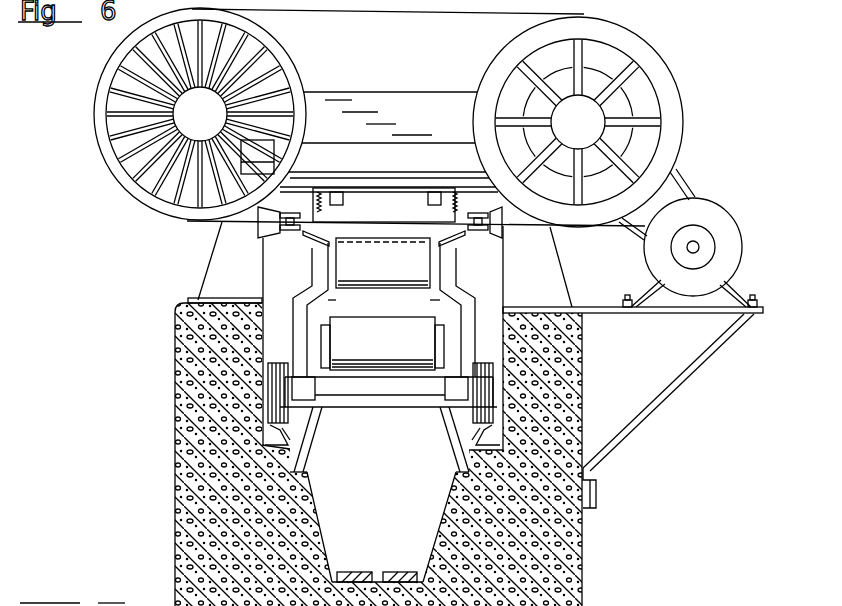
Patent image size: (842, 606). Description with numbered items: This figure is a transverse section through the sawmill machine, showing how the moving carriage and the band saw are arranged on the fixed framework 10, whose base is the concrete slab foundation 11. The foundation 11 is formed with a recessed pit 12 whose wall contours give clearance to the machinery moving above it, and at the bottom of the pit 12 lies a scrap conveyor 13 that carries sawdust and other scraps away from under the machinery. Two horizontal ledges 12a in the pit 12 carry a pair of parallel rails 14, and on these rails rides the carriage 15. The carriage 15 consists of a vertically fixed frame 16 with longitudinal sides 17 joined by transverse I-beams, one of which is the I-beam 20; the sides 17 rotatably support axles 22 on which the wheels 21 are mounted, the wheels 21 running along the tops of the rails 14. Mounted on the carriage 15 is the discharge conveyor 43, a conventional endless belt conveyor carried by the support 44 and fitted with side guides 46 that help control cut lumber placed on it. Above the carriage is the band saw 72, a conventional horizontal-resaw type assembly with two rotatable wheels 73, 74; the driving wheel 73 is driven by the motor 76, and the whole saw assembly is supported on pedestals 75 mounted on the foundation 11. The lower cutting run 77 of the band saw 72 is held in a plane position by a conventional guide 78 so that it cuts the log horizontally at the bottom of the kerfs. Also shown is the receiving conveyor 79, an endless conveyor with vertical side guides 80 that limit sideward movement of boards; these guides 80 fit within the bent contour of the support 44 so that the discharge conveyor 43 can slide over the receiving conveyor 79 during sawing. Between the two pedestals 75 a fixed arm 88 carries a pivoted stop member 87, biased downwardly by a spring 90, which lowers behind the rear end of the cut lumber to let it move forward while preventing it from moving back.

The fixed framework 10 is at (178, 359).
The concrete slab foundation 11 is at (576, 576).
The recessed pit 12 is at (311, 509).
The horizontal ledges 12a is at (293, 465).
The scrap conveyor 13 is at (362, 571).
The rails 14 is at (272, 447).
The carriage 15 is at (462, 270).
The frame 16 is at (360, 387).
The longitudinal sides 17 is at (316, 391).
The transverse I-beam 20 is at (380, 386).
The wheels 21 is at (283, 363).
The axles 22 is at (381, 405).
The discharge conveyor 43 is at (377, 291).
The front support 44 is at (311, 279).
The side guides 46 is at (320, 234).
The band saw 72 is at (505, 43).
The driving wheel 73 is at (491, 69).
The rotatable wheel 74 is at (296, 80).
The pedestals 75 is at (245, 278).
The motor 76 is at (725, 226).
The lower cutting run 77 is at (305, 213).
The guide 78 is at (290, 233).
The receiving conveyor 79 is at (419, 319).
The side guides 80 is at (306, 319).
The pivoted stop member 87 is at (392, 209).
The fixed arm 88 is at (388, 178).
The spring 90 is at (320, 206).